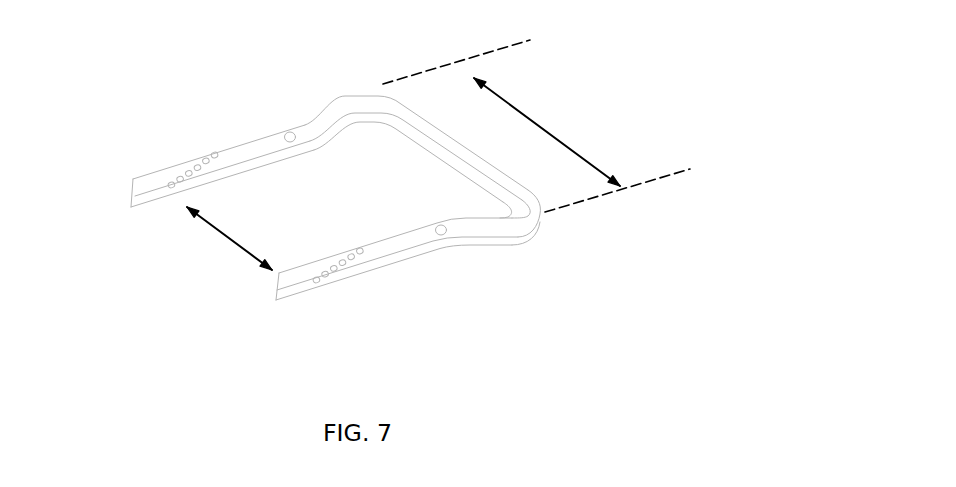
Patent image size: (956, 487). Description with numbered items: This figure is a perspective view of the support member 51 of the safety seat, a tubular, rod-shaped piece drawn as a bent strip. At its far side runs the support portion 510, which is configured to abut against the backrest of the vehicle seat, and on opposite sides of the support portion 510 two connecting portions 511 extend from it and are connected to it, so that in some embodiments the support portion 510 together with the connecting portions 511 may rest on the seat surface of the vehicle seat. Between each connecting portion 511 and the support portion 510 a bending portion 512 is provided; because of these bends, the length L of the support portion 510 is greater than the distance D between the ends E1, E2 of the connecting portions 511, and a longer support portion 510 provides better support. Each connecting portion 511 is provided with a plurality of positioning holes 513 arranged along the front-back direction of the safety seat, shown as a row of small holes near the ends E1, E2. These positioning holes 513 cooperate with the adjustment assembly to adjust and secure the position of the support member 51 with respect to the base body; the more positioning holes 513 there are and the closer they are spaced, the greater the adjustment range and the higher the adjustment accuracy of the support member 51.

The support member 51 is at (338, 197).
The support portion 510 is at (428, 134).
The connecting portion 511 is at (348, 304).
The bending portion 512 is at (520, 237).
The positioning holes 513 is at (348, 262).
The end of the connecting portion E1 is at (137, 188).
The end of the connecting portion E2 is at (285, 289).
The length of the support portion L is at (536, 126).
The distance between the ends of the connecting portion D is at (229, 238).